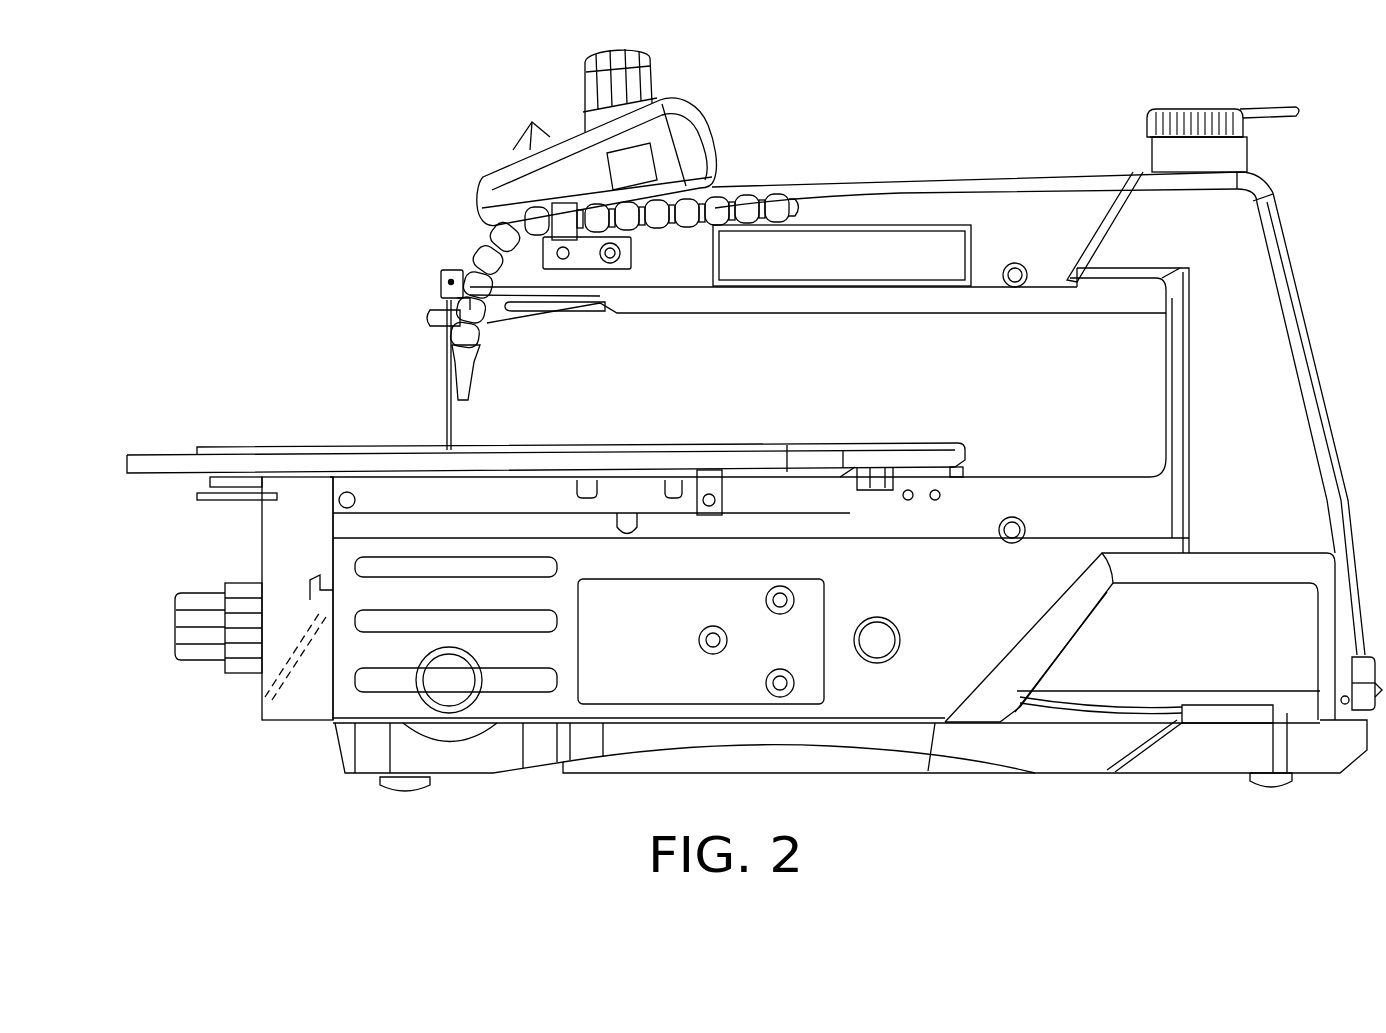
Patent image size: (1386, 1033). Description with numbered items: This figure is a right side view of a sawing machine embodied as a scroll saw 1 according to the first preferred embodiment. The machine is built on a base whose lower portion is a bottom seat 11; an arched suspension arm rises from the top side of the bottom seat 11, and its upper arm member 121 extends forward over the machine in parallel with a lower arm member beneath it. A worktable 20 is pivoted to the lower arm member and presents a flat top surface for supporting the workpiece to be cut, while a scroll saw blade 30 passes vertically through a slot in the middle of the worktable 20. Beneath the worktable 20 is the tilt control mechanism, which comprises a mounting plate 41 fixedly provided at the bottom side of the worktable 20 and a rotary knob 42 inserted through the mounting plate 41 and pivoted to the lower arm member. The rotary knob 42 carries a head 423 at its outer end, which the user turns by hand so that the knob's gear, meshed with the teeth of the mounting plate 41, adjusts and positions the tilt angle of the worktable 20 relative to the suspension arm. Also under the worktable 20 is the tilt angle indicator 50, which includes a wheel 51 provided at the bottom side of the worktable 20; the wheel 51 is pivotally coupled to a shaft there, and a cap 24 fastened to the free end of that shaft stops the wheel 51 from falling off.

The scroll saw 1 is at (931, 133).
The bottom seat 11 is at (1035, 753).
The upper arm member 121 is at (1033, 183).
The worktable 20 is at (152, 449).
The cap 24 is at (232, 502).
The scroll saw blade 30 is at (441, 399).
The mounting plate 41 is at (292, 710).
The rotary knob 42 is at (183, 670).
The head 423 is at (176, 641).
The tilt angle indicator 50 is at (140, 496).
The wheel 51 is at (207, 482).